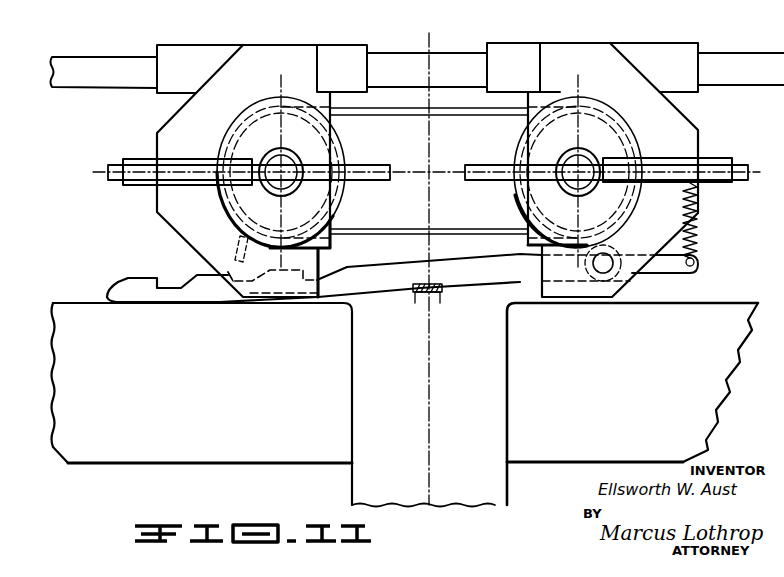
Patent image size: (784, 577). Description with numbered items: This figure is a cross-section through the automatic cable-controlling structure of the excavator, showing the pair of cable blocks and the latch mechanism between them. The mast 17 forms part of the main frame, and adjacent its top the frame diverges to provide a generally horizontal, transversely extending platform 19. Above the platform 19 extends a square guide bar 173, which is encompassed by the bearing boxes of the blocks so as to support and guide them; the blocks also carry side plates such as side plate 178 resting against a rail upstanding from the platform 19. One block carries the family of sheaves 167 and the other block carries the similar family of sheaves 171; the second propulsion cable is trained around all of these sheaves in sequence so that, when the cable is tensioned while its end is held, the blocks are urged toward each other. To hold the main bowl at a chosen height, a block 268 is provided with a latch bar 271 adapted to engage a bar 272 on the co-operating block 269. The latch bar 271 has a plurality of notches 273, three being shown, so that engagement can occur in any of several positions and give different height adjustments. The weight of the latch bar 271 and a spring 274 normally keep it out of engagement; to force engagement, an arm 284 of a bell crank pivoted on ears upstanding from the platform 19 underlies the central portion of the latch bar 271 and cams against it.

The mast 17 is at (508, 405).
The platform 19 is at (82, 300).
The family of sheaves 167 is at (597, 112).
The family of sheaves 171 is at (270, 118).
The square guide bar 173 is at (453, 57).
The side plate 178 is at (278, 50).
The block 268 is at (647, 148).
The co-operating block 269 is at (212, 144).
The latch bar 271 is at (482, 282).
The bar 272 is at (237, 243).
The notches 273 is at (164, 285).
The spring 274 is at (700, 249).
The arm of bell crank 284 is at (420, 296).